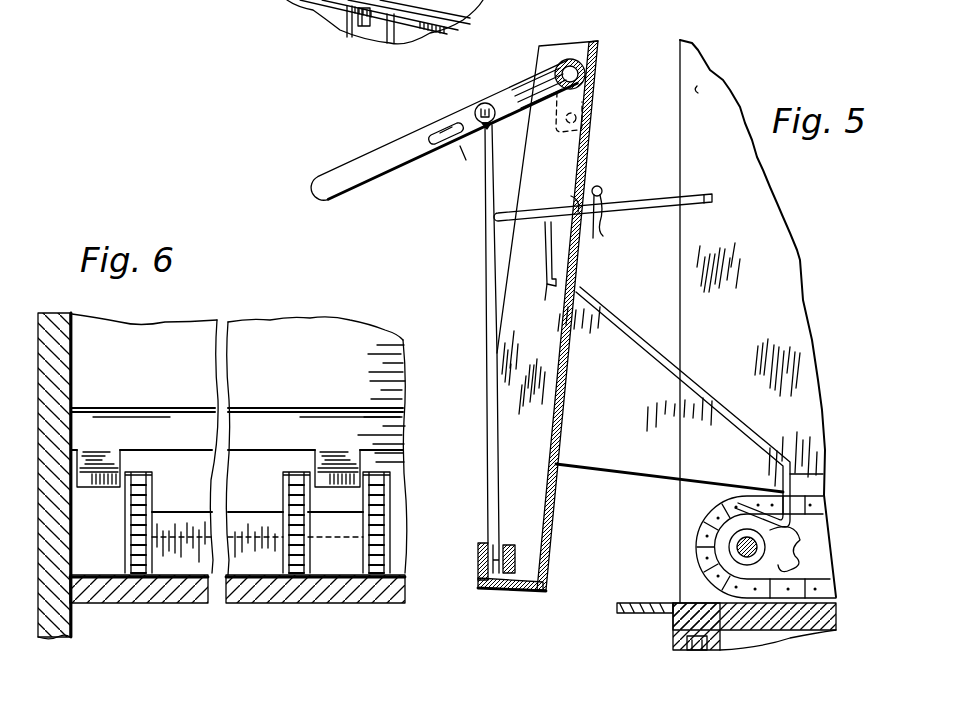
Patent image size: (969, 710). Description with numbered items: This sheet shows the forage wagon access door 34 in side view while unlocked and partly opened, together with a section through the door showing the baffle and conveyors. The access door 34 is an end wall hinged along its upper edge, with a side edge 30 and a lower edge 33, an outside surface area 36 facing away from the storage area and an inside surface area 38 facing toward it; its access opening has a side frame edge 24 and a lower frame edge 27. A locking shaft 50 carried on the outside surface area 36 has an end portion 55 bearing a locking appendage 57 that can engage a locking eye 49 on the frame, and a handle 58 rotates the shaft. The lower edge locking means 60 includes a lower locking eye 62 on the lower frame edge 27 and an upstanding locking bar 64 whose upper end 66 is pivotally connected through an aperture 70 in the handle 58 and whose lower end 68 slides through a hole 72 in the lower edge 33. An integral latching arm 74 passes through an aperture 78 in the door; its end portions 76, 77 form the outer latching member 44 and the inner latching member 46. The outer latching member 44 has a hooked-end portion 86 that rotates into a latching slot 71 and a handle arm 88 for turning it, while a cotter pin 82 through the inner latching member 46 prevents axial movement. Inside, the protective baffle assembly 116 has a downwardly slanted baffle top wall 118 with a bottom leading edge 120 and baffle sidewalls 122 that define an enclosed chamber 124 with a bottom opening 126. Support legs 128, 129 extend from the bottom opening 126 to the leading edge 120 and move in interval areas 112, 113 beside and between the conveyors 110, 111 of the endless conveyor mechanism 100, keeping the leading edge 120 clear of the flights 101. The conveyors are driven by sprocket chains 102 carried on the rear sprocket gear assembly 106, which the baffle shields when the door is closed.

In FIG. 5, the side frame edge 24 is at (679, 236).
In FIG. 5, the lower frame edge 27 is at (668, 588).
In FIG. 5, the side edge 30 is at (577, 42).
In FIG. 5, the lower edge 33 is at (538, 595).
In FIG. 5, the access door 34 is at (487, 432).
In FIG. 6, the access door 34 is at (97, 322).
In FIG. 5, the outside surface area 36 is at (543, 378).
In FIG. 6, the outside surface area 36 is at (168, 353).
In FIG. 5, the inside surface area 38 is at (560, 410).
In FIG. 6, the inside surface area 38 is at (200, 337).
In FIG. 5, the outer latching member 44 is at (471, 244).
In FIG. 5, the inner latching member 46 is at (680, 157).
In FIG. 5, the locking eye 49 is at (728, 83).
In FIG. 5, the locking shaft 50 is at (598, 43).
In FIG. 5, the end portion 55 is at (585, 76).
In FIG. 5, the locking appendage 57 is at (588, 101).
In FIG. 5, the handle 58 is at (353, 167).
In FIG. 5, the lower edge locking means 60 is at (527, 543).
In FIG. 5, the lower locking eye 62 is at (308, 13).
In FIG. 5, the locking bar 64 is at (486, 186).
In FIG. 5, the upper end 66 is at (462, 147).
In FIG. 5, the lower end 68 is at (353, 33).
In FIG. 5, the aperture 70 is at (483, 103).
In FIG. 5, the latching slot 71 is at (423, 162).
In FIG. 5, the hole 72 is at (490, 593).
In FIG. 5, the integral latching arm 74 is at (578, 259).
In FIG. 5, the end portion 76 is at (526, 226).
In FIG. 5, the end portion 77 is at (704, 203).
In FIG. 5, the aperture 78 is at (577, 205).
In FIG. 5, the cotter pin 82 is at (602, 186).
In FIG. 5, the hooked-end portion 86 is at (498, 217).
In FIG. 5, the handle arm 88 is at (548, 291).
In FIG. 5, the endless conveyor mechanism 100 is at (805, 468).
In FIG. 6, the flights 101 is at (173, 557).
In FIG. 5, the sprocket chains 102 is at (812, 514).
In FIG. 5, the rear sprocket gear assembly 106 is at (790, 566).
In FIG. 6, the conveyor 110 is at (400, 565).
In FIG. 5, the conveyor 111 is at (836, 510).
In FIG. 6, the conveyor 111 is at (263, 558).
In FIG. 6, the interval area 112 is at (106, 549).
In FIG. 6, the interval area 113 is at (340, 552).
In FIG. 5, the protective baffle assembly 116 is at (727, 395).
In FIG. 6, the protective baffle assembly 116 is at (364, 351).
In FIG. 5, the baffle top wall 118 is at (657, 362).
In FIG. 6, the baffle top wall 118 is at (327, 365).
In FIG. 5, the bottom leading edge 120 is at (796, 458).
In FIG. 5, the baffle sidewalls 122 is at (614, 457).
In FIG. 6, the baffle sidewalls 122 is at (197, 362).
In FIG. 5, the enclosed chamber 124 is at (622, 442).
In FIG. 5, the bottom opening 126 is at (670, 440).
In FIG. 5, the support leg 128 is at (792, 546).
In FIG. 6, the support leg 128 is at (106, 458).
In FIG. 6, the support leg 129 is at (333, 462).